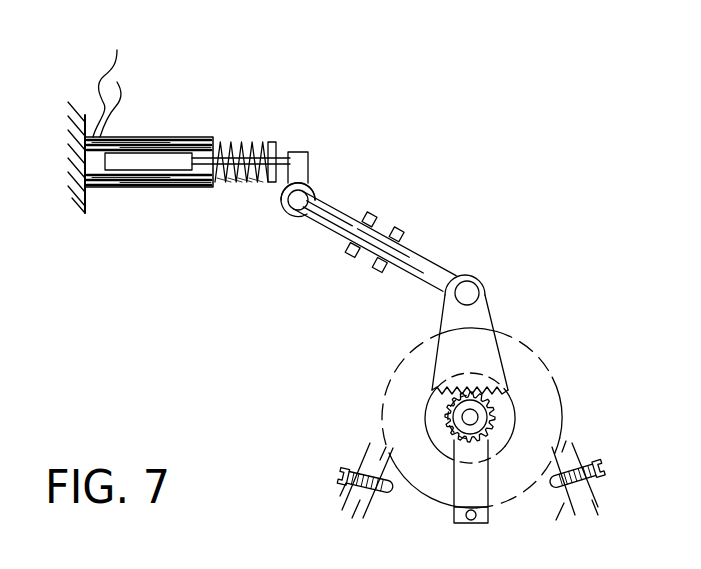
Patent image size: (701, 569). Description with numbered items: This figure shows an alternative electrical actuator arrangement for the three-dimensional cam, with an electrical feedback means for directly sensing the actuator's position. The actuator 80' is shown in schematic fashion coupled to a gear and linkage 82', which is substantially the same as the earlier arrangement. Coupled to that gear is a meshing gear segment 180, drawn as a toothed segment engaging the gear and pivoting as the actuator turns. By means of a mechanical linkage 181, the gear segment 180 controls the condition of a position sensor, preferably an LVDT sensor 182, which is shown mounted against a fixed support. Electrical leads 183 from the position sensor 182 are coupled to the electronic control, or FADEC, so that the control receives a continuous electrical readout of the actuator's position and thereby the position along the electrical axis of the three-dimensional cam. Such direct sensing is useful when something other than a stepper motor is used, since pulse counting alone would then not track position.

The meshing gear segment 180 is at (495, 313).
The mechanical linkage 181 is at (334, 208).
The LVDT sensor 182 is at (163, 137).
The electrical leads 183 is at (118, 78).
The actuator 80' is at (507, 418).
The gear and linkage 82' is at (547, 411).